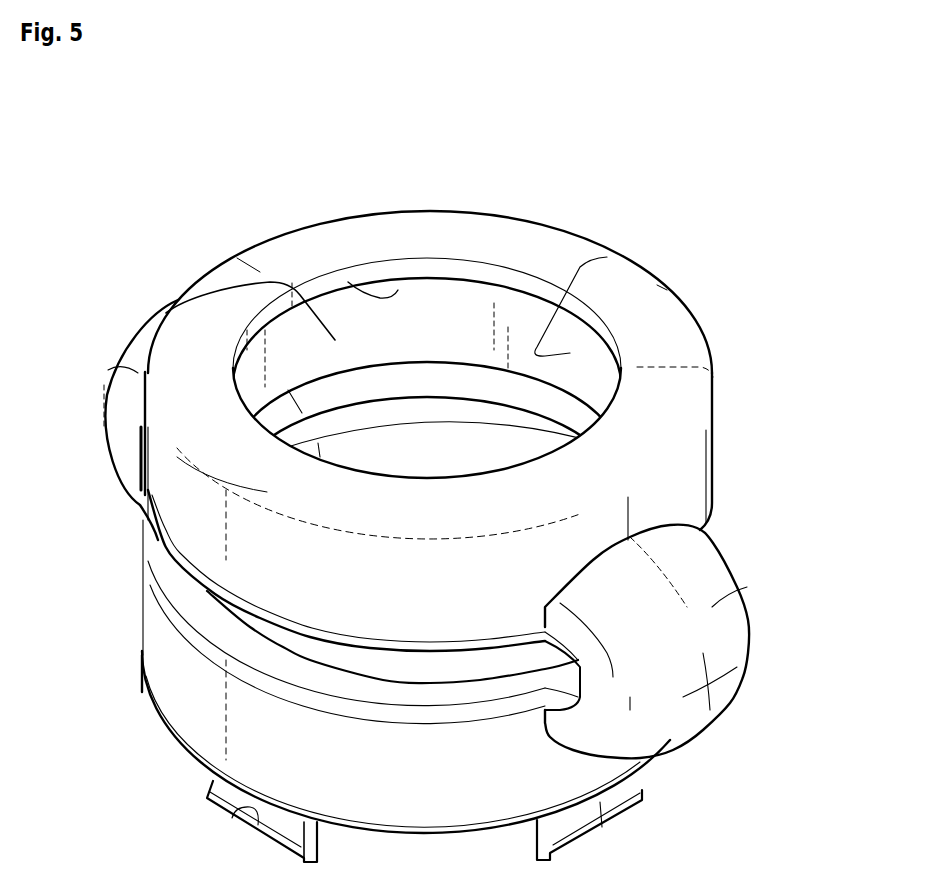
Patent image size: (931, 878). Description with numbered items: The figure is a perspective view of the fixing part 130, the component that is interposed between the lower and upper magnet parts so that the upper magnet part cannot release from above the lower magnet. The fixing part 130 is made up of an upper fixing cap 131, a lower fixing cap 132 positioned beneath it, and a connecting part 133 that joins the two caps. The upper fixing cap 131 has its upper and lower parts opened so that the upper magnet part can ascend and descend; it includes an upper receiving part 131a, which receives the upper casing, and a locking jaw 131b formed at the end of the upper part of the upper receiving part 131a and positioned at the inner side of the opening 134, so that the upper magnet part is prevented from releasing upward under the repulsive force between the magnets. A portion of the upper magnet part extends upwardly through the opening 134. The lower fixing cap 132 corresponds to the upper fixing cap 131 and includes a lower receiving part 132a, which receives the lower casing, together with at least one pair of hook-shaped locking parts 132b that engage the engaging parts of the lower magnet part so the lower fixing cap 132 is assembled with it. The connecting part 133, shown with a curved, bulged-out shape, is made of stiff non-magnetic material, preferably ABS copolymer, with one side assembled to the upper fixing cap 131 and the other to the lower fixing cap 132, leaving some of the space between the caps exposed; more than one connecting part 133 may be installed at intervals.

The fixing part 130 is at (178, 172).
The upper fixing cap 131 is at (693, 468).
The upper receiving part 131a is at (607, 257).
The locking jaw 131b is at (398, 290).
The lower fixing cap 132 is at (183, 697).
The lower receiving part 132a is at (292, 633).
The locking parts 132b is at (213, 813).
The connecting part 133 is at (713, 613).
The opening 134 is at (178, 302).